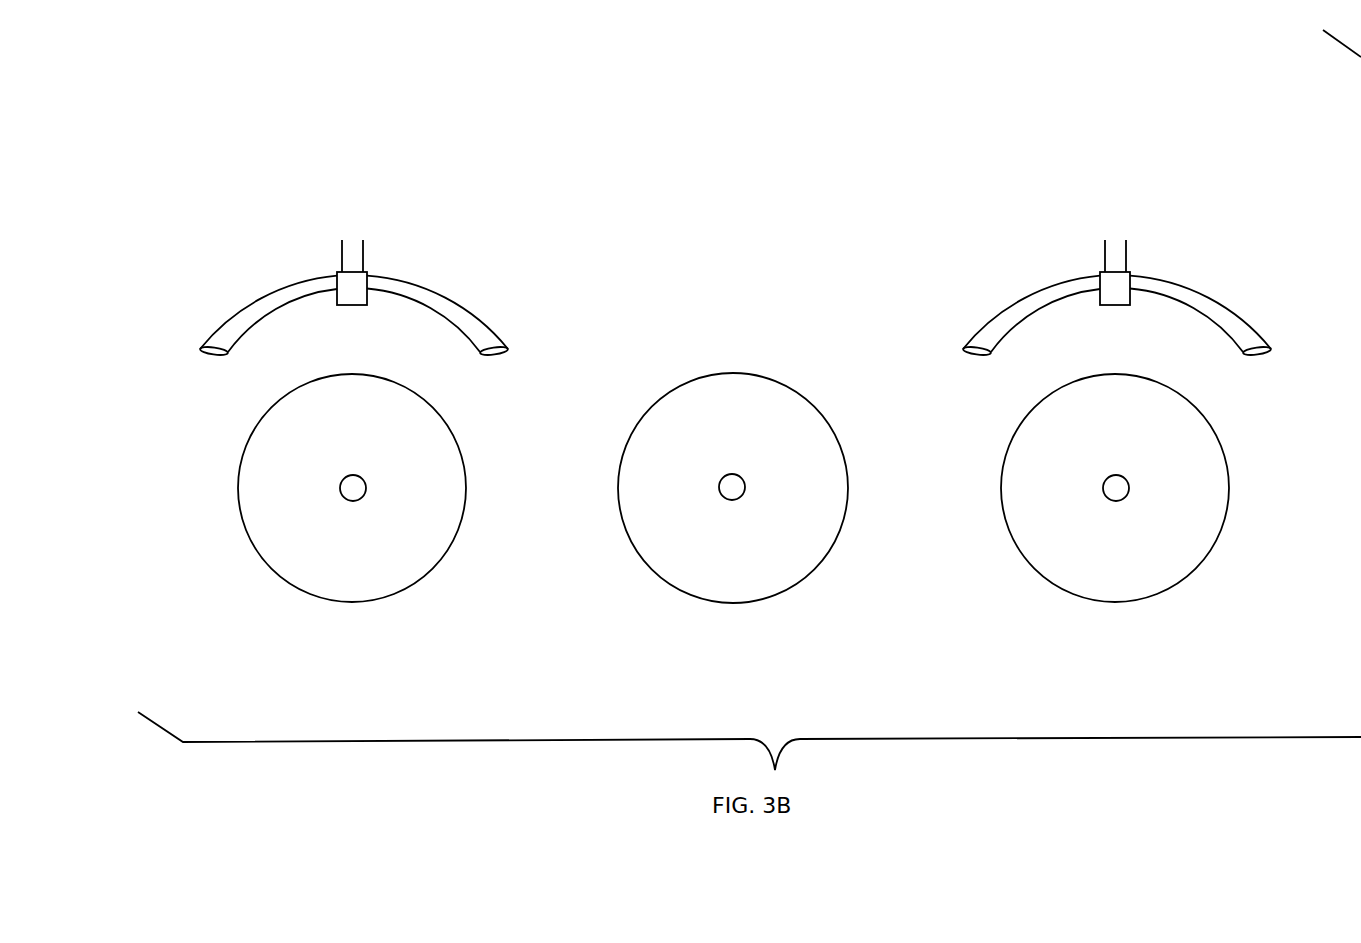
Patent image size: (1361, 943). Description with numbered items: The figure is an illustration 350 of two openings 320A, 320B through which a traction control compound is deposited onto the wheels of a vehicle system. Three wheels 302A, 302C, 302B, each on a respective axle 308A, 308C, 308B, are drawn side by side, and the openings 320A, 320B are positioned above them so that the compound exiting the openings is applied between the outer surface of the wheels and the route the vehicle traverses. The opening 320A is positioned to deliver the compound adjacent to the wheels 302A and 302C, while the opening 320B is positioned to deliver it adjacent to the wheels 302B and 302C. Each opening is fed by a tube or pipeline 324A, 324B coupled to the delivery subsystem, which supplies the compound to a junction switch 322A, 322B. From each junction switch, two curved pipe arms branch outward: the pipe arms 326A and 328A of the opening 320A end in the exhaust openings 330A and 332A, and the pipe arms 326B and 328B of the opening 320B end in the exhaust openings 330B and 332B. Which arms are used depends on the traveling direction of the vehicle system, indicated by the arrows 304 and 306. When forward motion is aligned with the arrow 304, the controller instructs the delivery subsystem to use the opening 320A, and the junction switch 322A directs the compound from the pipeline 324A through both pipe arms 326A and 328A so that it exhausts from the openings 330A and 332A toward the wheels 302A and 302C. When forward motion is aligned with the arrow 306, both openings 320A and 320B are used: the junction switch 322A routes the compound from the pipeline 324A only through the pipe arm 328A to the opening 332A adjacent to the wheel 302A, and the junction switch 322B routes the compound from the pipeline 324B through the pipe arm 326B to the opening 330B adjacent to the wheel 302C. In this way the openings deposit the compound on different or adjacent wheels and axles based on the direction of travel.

The wheel 302A is at (262, 560).
The wheel 302B is at (1025, 560).
The wheel 302C is at (642, 560).
The axle 308A is at (353, 501).
The axle 308B is at (1116, 501).
The axle 308C is at (732, 500).
The arrow 304 is at (559, 69).
The arrow 306 is at (998, 68).
The opening 320A is at (222, 220).
The opening 320B is at (985, 217).
The junction switch 322A is at (352, 305).
The junction switch 322B is at (1115, 305).
The pipeline 324A is at (363, 248).
The pipeline 324B is at (1126, 248).
The pipe arm 326A is at (258, 300).
The pipe arm 326B is at (1021, 300).
The pipe arm 328A is at (487, 325).
The pipe arm 328B is at (1250, 325).
The opening 330A is at (210, 363).
The opening 330B is at (973, 363).
The opening 332A is at (494, 363).
The opening 332B is at (1257, 363).
The illustration 350 is at (1180, 120).